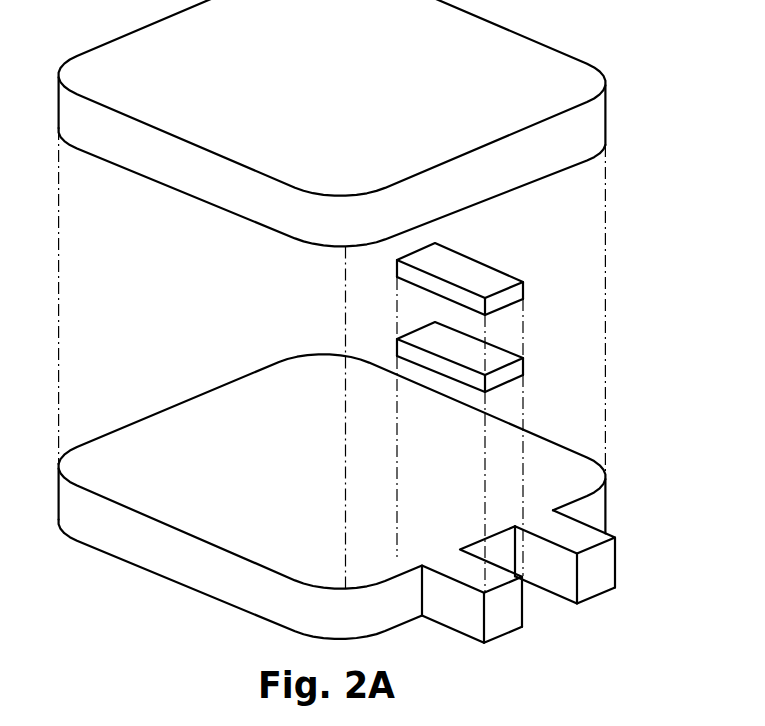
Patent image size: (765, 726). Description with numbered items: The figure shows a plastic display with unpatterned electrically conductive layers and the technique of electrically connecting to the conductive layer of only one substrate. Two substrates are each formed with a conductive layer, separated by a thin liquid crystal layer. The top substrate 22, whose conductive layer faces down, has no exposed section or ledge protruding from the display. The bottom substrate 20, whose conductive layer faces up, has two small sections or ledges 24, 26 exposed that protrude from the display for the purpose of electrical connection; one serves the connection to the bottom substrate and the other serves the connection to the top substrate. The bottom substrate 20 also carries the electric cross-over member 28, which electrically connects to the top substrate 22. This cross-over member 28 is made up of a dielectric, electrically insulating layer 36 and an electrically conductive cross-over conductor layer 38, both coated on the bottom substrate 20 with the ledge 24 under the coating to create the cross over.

The bottom substrate 20 is at (582, 470).
The top substrate 22 is at (578, 133).
The ledge 24 is at (515, 618).
The ledge 26 is at (605, 572).
The electric cross-over member 28 is at (524, 306).
The dielectric, electrically insulating layer 36 is at (498, 361).
The electrically conductive cross-over conductor layer 38 is at (483, 275).